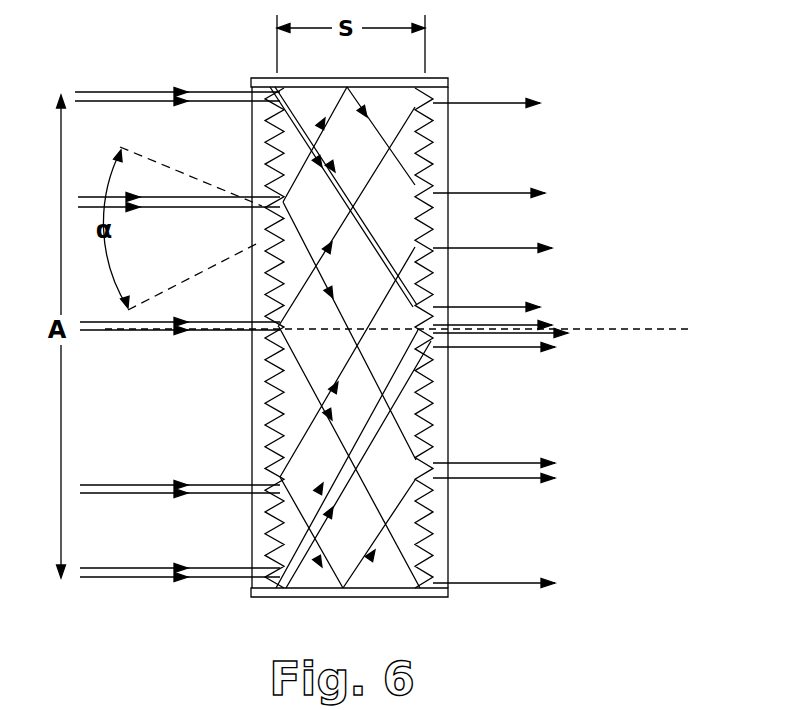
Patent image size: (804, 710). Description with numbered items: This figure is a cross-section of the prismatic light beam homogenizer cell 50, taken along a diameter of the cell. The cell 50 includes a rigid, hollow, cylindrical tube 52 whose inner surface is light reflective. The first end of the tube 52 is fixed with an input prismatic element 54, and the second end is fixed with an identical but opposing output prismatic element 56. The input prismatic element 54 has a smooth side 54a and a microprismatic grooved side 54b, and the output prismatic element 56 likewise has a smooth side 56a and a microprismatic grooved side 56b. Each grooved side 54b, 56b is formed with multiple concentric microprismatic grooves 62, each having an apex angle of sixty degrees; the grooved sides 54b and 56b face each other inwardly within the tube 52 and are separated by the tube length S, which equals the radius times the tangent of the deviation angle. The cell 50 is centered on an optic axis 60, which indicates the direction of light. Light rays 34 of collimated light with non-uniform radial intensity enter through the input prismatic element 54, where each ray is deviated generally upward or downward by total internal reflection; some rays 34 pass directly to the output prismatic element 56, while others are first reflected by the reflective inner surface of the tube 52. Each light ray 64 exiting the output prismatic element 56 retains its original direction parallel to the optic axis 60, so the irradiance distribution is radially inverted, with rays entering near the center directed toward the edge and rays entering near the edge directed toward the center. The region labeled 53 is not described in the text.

The prismatic light beam homogenizer cell 50 is at (458, 341).
The tube 52 is at (350, 78).
The lower light ray paths 53 is at (353, 417).
The input prismatic element 54 is at (266, 366).
The smooth side 54a is at (252, 442).
The microprismatic grooved side 54b is at (287, 560).
The output prismatic element 56 is at (440, 366).
The smooth side 56a is at (450, 527).
The microprismatic grooved side 56b is at (412, 580).
The optic axis 60 is at (633, 332).
The microprismatic grooves 62 is at (343, 273).
The light ray exiting the output prismatic element 64 is at (483, 343).
The light rays 34 is at (142, 493).